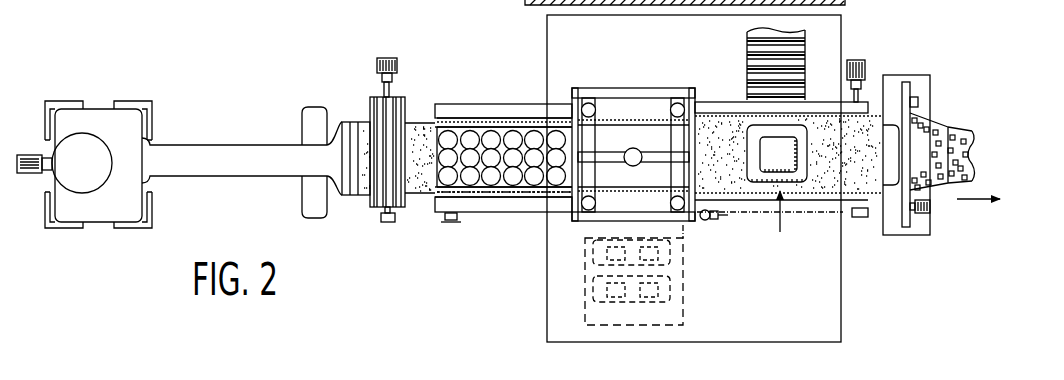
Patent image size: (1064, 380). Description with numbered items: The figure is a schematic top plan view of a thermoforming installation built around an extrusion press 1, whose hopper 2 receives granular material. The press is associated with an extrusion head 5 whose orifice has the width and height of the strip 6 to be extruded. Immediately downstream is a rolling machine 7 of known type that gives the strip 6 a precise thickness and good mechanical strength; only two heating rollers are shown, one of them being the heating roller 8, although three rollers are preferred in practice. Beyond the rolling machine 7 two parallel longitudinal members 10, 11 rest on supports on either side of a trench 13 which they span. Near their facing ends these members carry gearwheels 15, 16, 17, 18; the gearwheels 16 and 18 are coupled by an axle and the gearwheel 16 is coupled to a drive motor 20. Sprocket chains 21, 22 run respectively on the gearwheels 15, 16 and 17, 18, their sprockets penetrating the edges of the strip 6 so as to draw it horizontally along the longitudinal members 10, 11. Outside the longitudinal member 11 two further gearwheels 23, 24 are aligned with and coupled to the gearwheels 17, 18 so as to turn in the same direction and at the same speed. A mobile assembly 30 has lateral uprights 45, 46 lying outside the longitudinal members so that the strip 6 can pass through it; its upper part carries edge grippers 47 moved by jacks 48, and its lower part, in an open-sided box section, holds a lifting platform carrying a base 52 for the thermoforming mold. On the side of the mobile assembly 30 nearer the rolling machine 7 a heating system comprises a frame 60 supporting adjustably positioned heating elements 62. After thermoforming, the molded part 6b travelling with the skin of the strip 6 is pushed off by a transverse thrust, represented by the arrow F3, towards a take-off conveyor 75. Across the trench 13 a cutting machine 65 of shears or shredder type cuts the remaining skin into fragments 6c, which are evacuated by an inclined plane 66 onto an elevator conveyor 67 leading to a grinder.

The extrusion press 1 is at (189, 127).
The hopper 2 is at (84, 155).
The extrusion head 5 is at (348, 130).
The strip 6 is at (418, 128).
The molded part 6b is at (770, 160).
The fragments 6c is at (950, 180).
The rolling machine 7 is at (406, 84).
The heating roller 8 is at (386, 58).
The longitudinal member 10 is at (485, 108).
The longitudinal member 11 is at (464, 205).
The trench 13 is at (812, 302).
The gearwheel 15 is at (450, 122).
The gearwheel 16 is at (868, 100).
The gearwheel 17 is at (450, 200).
The gearwheel 18 is at (866, 208).
The drive motor 20 is at (862, 72).
The sprocket chain 21 is at (527, 116).
The sprocket chain 22 is at (510, 197).
The gearwheel 23 is at (445, 223).
The gearwheel 24 is at (851, 213).
The mobile assembly 30 is at (662, 86).
The lateral upright 45 is at (572, 138).
The lateral upright 46 is at (695, 135).
The edge grippers 47 is at (613, 185).
The jacks 48 is at (590, 109).
The base 52 is at (679, 316).
The frame 60 is at (488, 195).
The heating elements 62 is at (468, 160).
The cutting machine 65 is at (920, 87).
The inclined plane 66 is at (918, 137).
The elevator conveyor 67 is at (968, 137).
The take-off conveyor 75 is at (790, 62).
The arrow F3 is at (785, 225).